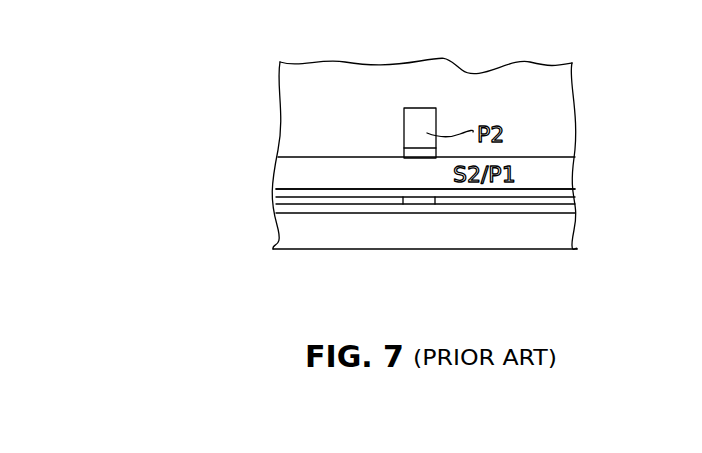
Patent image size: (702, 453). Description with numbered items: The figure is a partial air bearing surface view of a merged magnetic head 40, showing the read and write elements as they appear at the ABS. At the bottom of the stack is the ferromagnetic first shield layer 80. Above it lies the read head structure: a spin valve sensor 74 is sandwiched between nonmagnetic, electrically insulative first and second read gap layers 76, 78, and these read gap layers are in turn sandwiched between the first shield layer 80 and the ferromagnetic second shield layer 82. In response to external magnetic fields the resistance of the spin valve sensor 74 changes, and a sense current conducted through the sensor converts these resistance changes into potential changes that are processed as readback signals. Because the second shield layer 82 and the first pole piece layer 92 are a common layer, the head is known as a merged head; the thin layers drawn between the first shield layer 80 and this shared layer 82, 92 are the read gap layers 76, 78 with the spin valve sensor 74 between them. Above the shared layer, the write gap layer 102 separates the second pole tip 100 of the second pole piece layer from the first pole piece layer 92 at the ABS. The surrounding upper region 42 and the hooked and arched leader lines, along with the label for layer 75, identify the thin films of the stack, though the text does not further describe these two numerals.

The merged magnetic head 40 is at (611, 75).
The dielectric layer 42 is at (282, 92).
The second pole tip 100 is at (427, 115).
The write gap layer 102 is at (418, 148).
The second shield layer 82 is at (277, 178).
The first pole piece layer 92 is at (277, 178).
The first read gap layer 76 is at (315, 214).
The second read gap layer 78 is at (328, 213).
The tunnel layer 75 is at (363, 213).
The spin valve sensor 74 is at (423, 203).
The first shield layer 80 is at (565, 232).